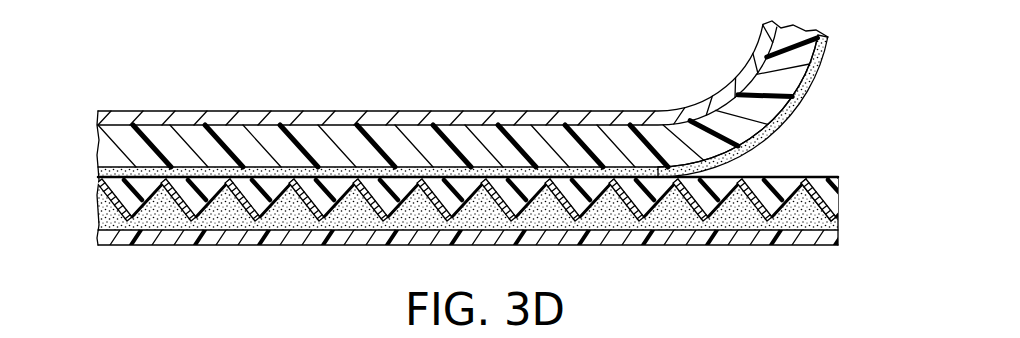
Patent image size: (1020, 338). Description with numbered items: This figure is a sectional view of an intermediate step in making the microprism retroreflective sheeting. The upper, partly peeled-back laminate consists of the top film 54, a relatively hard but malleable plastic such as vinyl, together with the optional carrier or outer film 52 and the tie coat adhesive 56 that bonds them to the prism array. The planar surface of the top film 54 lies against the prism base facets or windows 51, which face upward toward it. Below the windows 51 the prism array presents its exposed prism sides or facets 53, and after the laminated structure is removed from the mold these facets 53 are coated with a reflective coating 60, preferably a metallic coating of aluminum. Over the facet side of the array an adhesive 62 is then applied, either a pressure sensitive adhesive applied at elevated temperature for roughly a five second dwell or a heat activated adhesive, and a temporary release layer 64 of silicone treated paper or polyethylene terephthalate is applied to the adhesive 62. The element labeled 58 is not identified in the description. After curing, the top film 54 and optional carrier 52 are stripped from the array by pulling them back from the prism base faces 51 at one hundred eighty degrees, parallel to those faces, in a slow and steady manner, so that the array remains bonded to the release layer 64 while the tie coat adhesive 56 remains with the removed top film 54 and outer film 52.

The prism base facets 51 is at (518, 170).
The optional carrier film 52 is at (720, 77).
The prism facets 53 is at (110, 217).
The top film 54 is at (790, 68).
The tie coat adhesive 56 is at (797, 117).
The microprism layer 58 is at (840, 190).
The reflective coating 60 is at (840, 207).
The adhesive 62 is at (802, 220).
The temporary release layer 64 is at (687, 245).